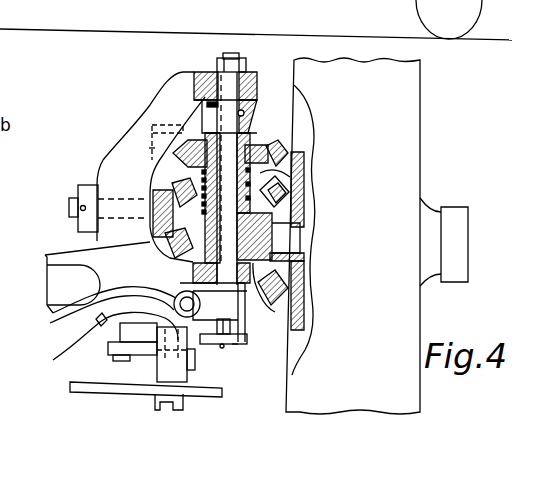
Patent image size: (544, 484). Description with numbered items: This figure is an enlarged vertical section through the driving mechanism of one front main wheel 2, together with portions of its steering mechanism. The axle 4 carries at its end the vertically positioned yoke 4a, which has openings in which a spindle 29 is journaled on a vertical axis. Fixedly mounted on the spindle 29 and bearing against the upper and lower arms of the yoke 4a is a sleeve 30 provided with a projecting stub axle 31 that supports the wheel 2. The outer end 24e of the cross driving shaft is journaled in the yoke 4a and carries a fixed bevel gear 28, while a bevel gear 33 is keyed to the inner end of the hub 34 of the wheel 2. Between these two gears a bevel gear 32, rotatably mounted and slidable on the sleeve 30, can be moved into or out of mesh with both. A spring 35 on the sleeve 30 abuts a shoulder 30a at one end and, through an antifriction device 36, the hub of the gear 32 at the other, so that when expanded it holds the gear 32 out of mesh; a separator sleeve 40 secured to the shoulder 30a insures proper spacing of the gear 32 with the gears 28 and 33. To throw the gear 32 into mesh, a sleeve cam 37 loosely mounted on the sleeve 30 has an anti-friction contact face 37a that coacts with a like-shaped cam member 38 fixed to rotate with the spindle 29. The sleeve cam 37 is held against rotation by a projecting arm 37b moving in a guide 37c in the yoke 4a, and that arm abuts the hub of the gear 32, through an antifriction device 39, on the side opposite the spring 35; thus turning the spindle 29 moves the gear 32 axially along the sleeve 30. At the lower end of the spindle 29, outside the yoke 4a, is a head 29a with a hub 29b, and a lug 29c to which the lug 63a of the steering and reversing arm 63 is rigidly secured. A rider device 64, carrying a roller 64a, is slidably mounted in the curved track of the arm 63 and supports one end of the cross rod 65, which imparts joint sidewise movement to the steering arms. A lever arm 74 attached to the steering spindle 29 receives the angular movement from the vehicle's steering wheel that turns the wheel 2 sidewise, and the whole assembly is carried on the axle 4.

The front main wheel 2 is at (422, 131).
The axle 4 is at (47, 279).
The yoke 4a is at (158, 127).
The outer end of cross driving shaft 24e is at (70, 208).
The bevel gear 28 is at (97, 241).
The spindle 29 is at (228, 50).
The head 29a is at (247, 318).
The hub 29b is at (60, 320).
The lug 29c is at (247, 343).
The sleeve 30 is at (250, 297).
The shoulder 30a is at (185, 262).
The stub axle 31 is at (286, 239).
The bevel gear 32 is at (279, 150).
The bevel gear 33 is at (299, 304).
The hub 34 is at (304, 230).
The spring 35 is at (304, 178).
The antifriction device 36 is at (203, 170).
The sleeve cam 37 is at (200, 120).
The anti-friction contact face 37a is at (200, 98).
The projecting arm 37b is at (150, 148).
The guide 37c is at (185, 157).
The cam member 38 is at (178, 78).
The antifriction device 39 is at (250, 153).
The separator sleeve 40 is at (200, 176).
The steering and reversing arm 63 is at (110, 349).
The lug 63a is at (235, 347).
The rider device 64 is at (195, 358).
The roller 64a is at (56, 358).
The cross rod 65 is at (110, 395).
The lever arm 74 is at (97, 322).